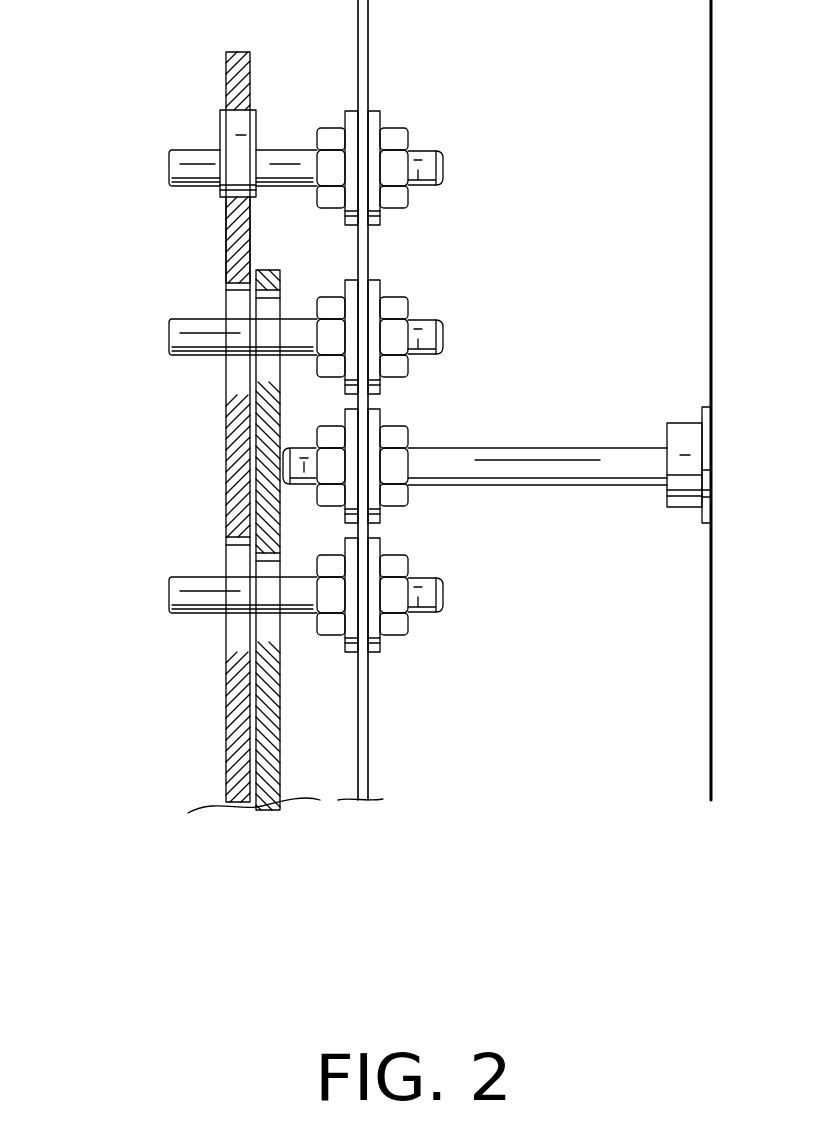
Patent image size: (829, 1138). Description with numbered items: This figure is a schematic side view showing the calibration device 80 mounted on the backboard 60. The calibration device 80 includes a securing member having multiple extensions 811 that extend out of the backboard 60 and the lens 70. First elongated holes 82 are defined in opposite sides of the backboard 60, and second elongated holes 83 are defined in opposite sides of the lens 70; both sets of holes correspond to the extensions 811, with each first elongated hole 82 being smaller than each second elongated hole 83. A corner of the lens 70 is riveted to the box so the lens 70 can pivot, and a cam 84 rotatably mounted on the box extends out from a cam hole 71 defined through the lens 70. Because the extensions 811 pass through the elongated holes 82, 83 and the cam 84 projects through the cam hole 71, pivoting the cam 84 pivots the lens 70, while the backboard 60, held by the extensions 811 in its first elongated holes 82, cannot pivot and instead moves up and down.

The backboard 60 is at (263, 802).
The lens 70 is at (237, 52).
The cam hole 71 is at (220, 210).
The calibration device 80 is at (187, 132).
The extensions 811 is at (193, 617).
The first elongated holes 82 is at (270, 630).
The second elongated holes 83 is at (226, 304).
The cam 84 is at (247, 130).